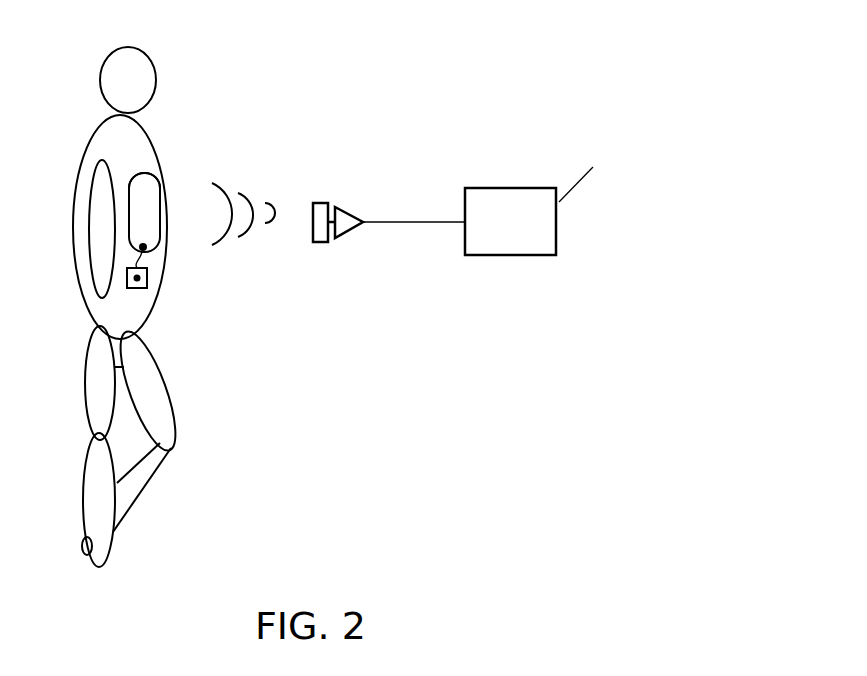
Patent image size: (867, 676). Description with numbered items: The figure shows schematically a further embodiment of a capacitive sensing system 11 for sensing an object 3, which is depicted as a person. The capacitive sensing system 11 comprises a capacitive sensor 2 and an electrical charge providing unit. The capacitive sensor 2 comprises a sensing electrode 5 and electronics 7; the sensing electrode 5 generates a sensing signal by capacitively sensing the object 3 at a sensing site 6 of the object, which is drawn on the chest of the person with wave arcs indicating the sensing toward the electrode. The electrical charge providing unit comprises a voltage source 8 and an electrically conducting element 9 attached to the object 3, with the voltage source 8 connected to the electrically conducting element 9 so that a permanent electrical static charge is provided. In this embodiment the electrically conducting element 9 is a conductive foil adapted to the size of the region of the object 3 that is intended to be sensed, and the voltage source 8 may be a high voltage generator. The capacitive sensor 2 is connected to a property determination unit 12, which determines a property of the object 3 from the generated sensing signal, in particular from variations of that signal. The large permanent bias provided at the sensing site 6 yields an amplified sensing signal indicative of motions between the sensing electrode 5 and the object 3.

The capacitive sensor 2 is at (362, 216).
The object 3 is at (185, 322).
The sensing electrode 5 is at (320, 203).
The sensing site 6 is at (168, 179).
The electronics 7 is at (351, 240).
The voltage source 8 is at (147, 278).
The electrically conducting element 9 is at (137, 177).
The capacitive sensing system 11 is at (497, 45).
The property determination unit 12 is at (517, 188).